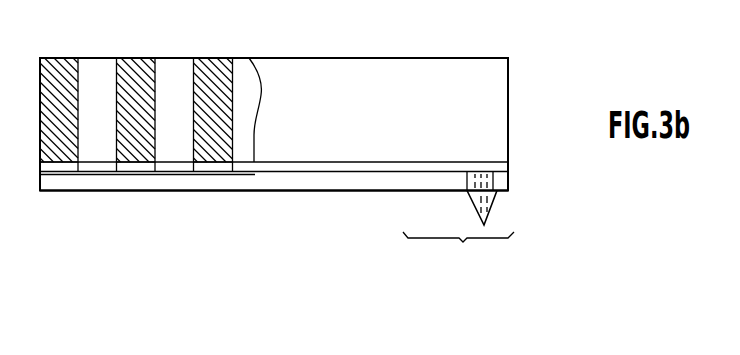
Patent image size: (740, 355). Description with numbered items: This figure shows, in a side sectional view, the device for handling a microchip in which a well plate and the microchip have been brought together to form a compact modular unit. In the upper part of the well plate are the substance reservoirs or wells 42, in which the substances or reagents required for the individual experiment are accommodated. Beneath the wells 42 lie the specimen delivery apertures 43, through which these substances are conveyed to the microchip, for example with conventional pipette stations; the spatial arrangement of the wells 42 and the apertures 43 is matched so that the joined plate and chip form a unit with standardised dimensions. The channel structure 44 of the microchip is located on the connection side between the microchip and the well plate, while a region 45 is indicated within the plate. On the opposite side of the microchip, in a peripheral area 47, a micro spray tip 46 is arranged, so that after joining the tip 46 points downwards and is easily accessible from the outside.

The substance reservoirs or wells 42 is at (98, 88).
The specimen delivery apertures 43 is at (97, 168).
The channel structure 44 is at (168, 185).
The curved boundary region 45 is at (292, 161).
The micro spray tip 46 is at (496, 217).
The peripheral area 47 is at (443, 240).